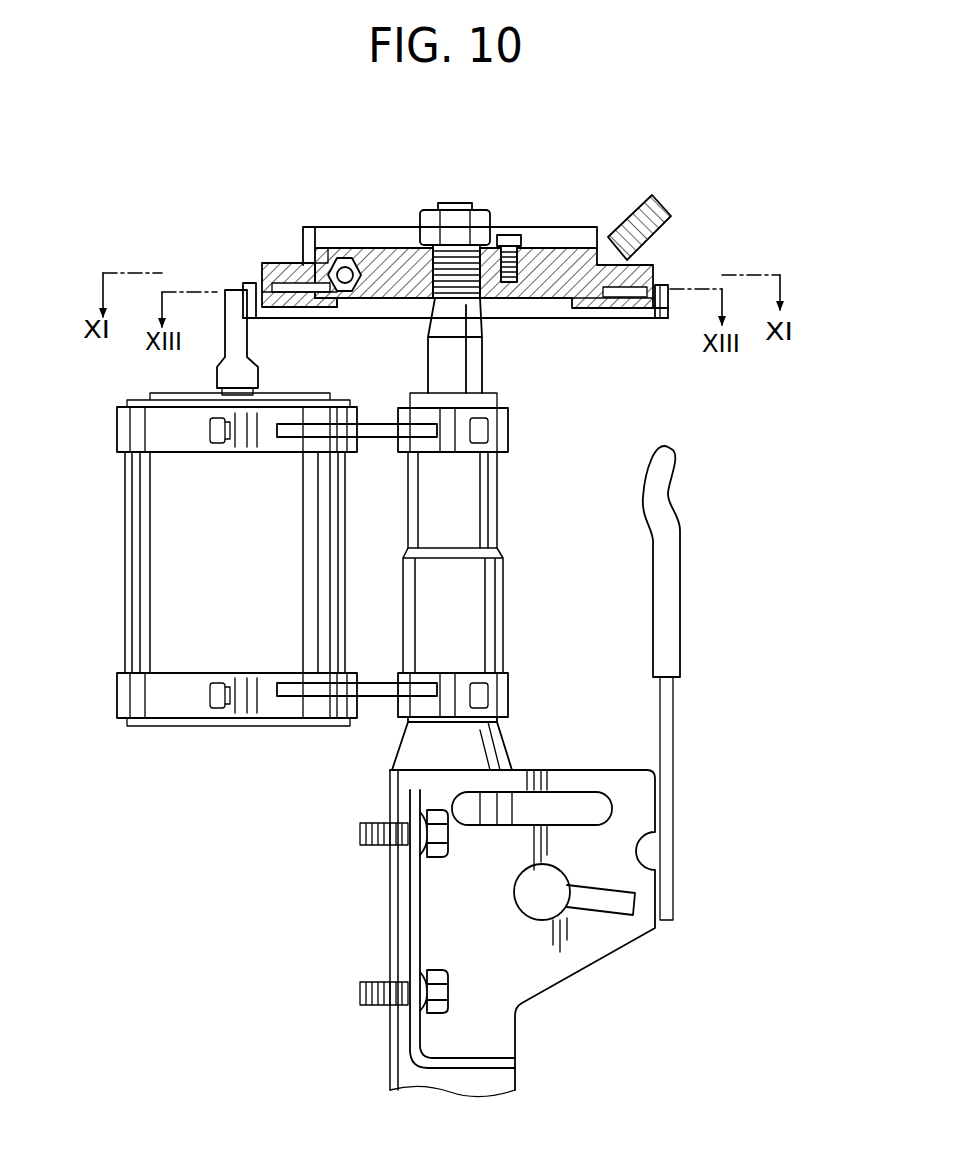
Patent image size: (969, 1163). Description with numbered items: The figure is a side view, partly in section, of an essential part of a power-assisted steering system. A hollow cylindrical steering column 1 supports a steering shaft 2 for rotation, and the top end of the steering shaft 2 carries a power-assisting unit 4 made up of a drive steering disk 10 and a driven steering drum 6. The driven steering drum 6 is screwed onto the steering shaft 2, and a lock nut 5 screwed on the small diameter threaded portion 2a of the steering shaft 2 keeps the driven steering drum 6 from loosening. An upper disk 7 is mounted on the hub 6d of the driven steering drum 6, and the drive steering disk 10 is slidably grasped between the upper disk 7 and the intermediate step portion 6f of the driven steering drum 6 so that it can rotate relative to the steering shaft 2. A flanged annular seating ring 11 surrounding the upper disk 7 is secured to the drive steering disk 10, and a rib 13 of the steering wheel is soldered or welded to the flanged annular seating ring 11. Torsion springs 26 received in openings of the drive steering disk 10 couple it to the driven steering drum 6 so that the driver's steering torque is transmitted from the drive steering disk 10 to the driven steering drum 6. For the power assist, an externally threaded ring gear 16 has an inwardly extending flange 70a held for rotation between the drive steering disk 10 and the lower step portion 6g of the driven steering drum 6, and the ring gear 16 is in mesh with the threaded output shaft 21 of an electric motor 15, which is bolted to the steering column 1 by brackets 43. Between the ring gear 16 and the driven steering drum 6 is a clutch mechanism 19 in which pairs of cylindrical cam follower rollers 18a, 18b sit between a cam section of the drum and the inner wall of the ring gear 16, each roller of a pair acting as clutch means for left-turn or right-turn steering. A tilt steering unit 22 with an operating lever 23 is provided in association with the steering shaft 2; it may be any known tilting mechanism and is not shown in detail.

The steering column 1 is at (492, 606).
The steering shaft 2 is at (472, 372).
The small diameter threaded portion 2a is at (452, 203).
The power-assisting unit 4 is at (406, 214).
The lock nut 5 is at (431, 226).
The driven steering drum 6 is at (515, 300).
The hub 6d is at (405, 252).
The intermediate step portion 6f is at (520, 250).
The lower step portion 6g is at (576, 270).
The upper disk 7 is at (547, 246).
The drive steering disk 10 is at (565, 256).
The flanged annular seating ring 11 is at (305, 228).
The rib 13 is at (660, 212).
The electric motor 15 is at (248, 571).
The ring gear 16 is at (661, 290).
The cam follower roller 18a is at (290, 272).
The cam follower roller 18b is at (610, 300).
The clutch mechanism 19 is at (262, 290).
The threaded output shaft 21 is at (228, 370).
The tilt steering unit 22 is at (573, 740).
The operating lever 23 is at (680, 632).
The torsion spring 26 is at (345, 292).
The bracket 43 is at (370, 446).
The inwardly extending flange 70a is at (283, 306).